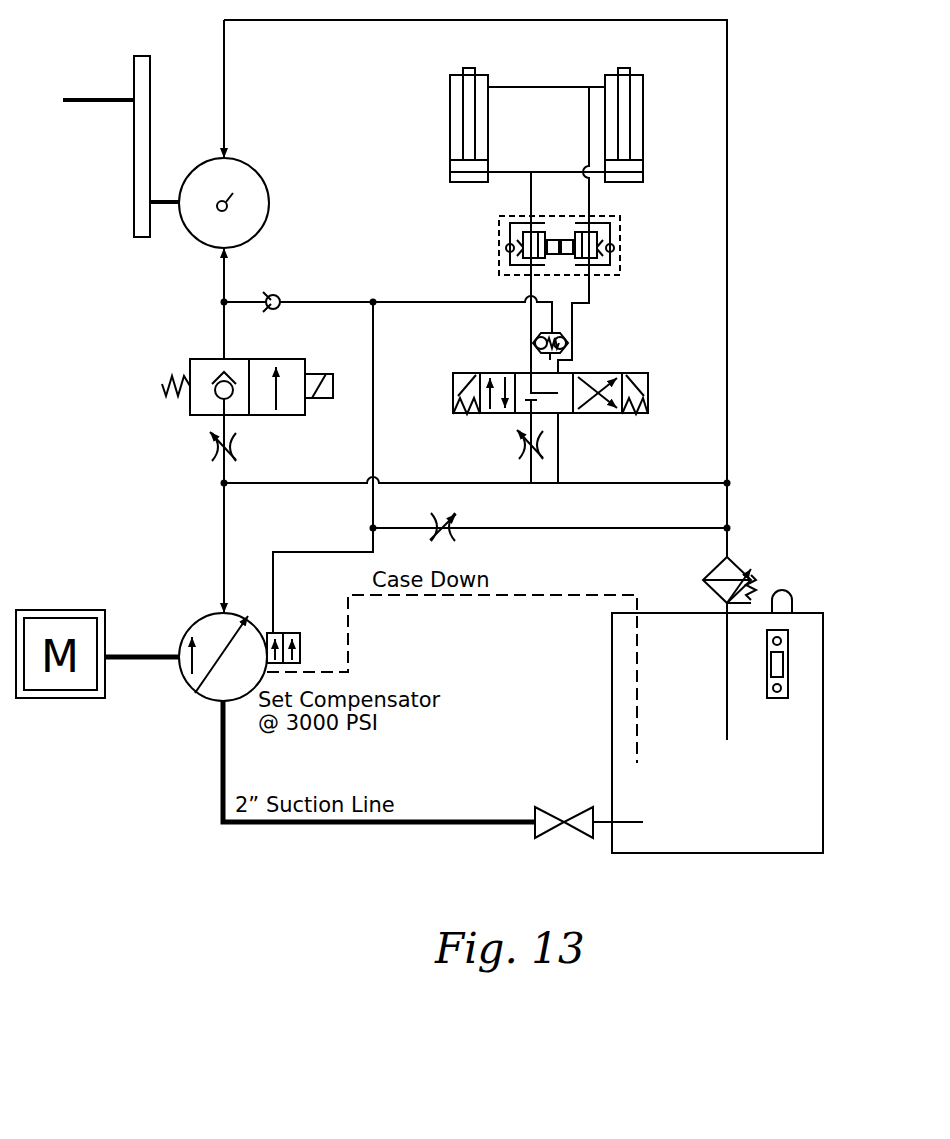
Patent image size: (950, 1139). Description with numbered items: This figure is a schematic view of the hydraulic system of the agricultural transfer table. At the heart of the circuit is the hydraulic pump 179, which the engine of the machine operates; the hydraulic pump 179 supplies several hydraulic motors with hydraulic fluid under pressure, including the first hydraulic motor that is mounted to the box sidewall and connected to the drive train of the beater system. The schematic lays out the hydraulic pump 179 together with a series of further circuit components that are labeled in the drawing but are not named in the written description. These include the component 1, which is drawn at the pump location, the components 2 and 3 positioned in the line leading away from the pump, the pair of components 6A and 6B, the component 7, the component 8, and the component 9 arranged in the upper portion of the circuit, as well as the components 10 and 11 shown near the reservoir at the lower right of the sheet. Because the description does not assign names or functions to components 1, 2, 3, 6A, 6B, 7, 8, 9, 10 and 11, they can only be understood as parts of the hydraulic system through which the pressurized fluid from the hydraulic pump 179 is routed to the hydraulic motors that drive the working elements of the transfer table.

The variable displacement pump 1 is at (239, 657).
The flow control valve 2 is at (232, 447).
The solenoid valve 3 is at (248, 398).
The flow control valve 6A is at (469, 521).
The flow control valve 6B is at (511, 450).
The directional control valve 7 is at (563, 393).
The shuttle valve 8 is at (566, 347).
The pilot operated check valve 9 is at (548, 245).
The relief valve 10 is at (742, 565).
The shutoff valve 11 is at (589, 811).
The hydraulic pump 179 is at (205, 692).